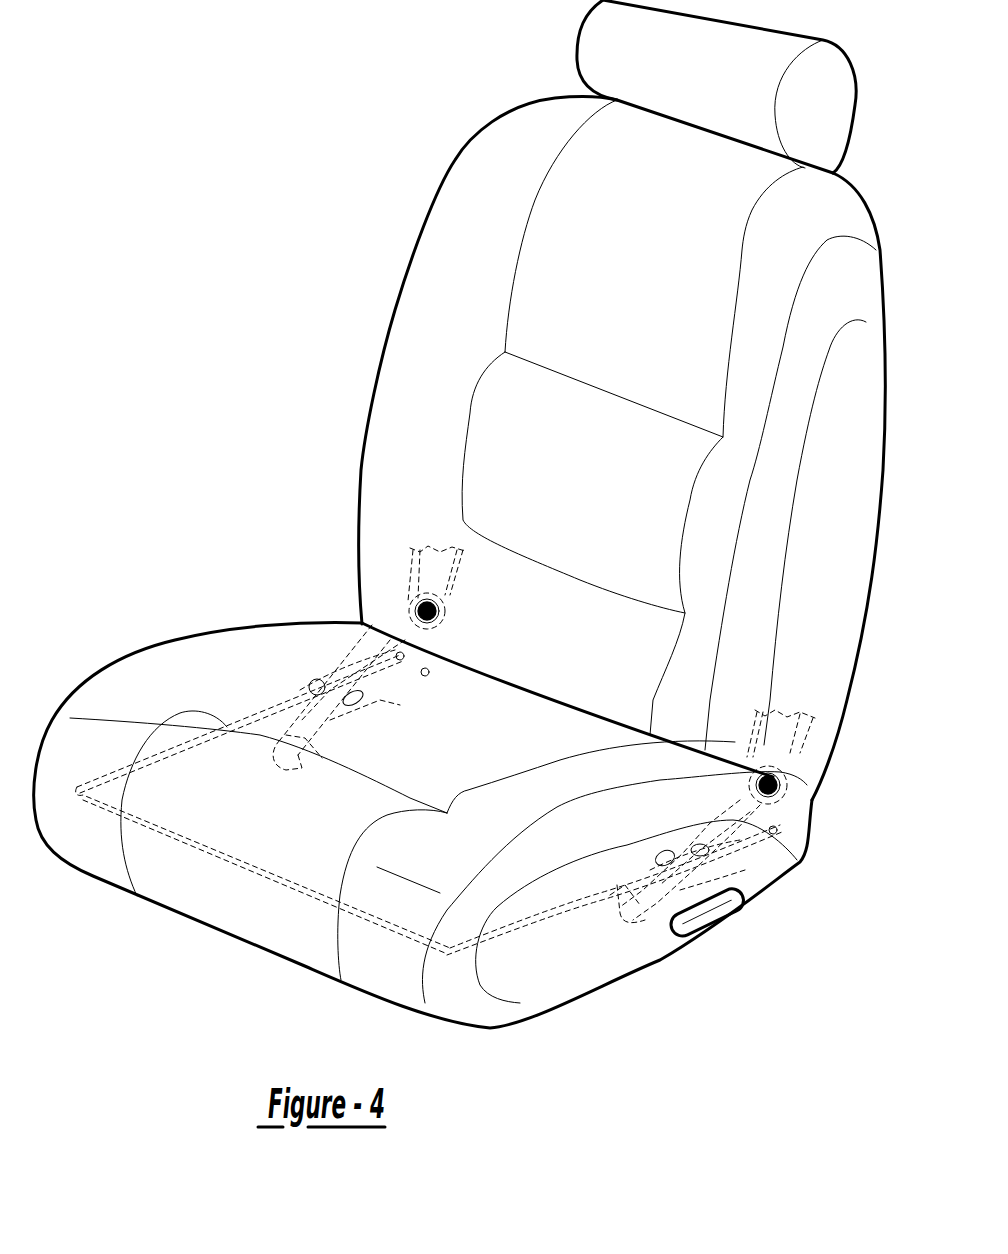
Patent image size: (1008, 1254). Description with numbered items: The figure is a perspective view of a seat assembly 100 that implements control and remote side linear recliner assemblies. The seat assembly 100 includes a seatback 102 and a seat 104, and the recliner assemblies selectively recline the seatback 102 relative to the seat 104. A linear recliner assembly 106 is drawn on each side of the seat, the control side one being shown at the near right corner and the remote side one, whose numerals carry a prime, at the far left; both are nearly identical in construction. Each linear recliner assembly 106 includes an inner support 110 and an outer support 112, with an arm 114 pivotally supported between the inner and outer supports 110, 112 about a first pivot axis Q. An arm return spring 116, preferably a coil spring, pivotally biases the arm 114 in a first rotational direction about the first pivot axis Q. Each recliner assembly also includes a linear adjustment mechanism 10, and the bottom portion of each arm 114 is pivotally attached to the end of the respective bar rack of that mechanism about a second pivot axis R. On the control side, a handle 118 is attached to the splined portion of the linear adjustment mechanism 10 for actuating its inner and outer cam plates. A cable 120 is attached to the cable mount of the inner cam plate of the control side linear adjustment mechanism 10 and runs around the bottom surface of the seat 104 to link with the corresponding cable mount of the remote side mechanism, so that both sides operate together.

The seat assembly 100 is at (236, 394).
The seatback 102 is at (847, 283).
The seat 104 is at (225, 895).
The cable 120 is at (362, 917).
The linear adjustment mechanism 10 is at (385, 700).
The arm return spring 116 is at (422, 605).
The linear recliner assembly 106 is at (282, 627).
The inner support 110 is at (303, 747).
The outer support 112 is at (282, 749).
The arm 114 is at (400, 652).
The handle 118 is at (702, 921).
The first pivot axis Q is at (422, 608).
The second pivot axis R is at (429, 673).